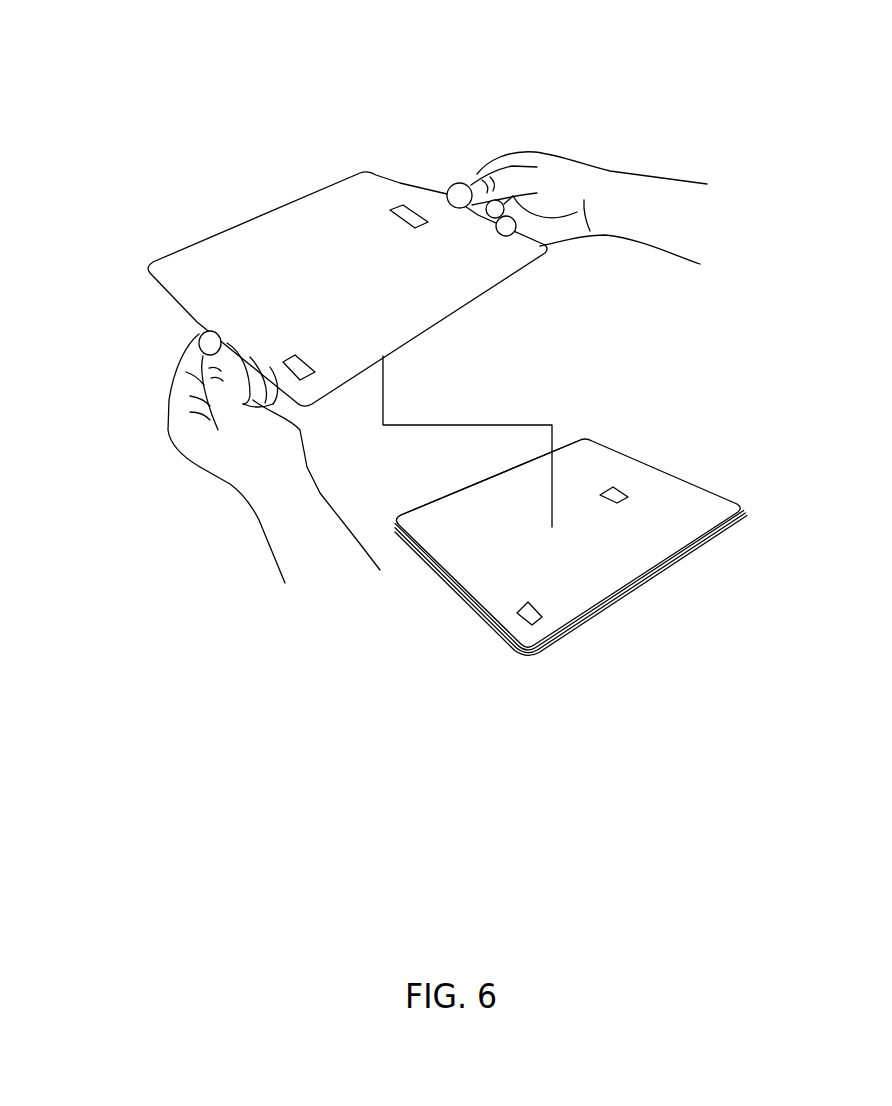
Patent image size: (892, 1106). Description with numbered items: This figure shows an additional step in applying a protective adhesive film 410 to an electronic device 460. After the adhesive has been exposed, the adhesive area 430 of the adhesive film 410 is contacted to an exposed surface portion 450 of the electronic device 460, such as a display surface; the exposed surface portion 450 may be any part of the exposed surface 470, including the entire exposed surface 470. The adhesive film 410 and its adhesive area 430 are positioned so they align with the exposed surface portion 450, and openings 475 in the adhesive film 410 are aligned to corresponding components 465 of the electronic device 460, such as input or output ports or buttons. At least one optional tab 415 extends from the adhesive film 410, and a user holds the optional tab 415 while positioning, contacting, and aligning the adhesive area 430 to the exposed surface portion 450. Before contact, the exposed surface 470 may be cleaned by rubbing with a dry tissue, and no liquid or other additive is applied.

The adhesive film 410 is at (330, 223).
The openings 475 is at (412, 208).
The optional tab 415 is at (442, 195).
The adhesive area 430 is at (412, 330).
The exposed surface portion 450 is at (592, 477).
The components 465 is at (616, 490).
The exposed surface 470 is at (643, 513).
The electronic device 460 is at (679, 556).